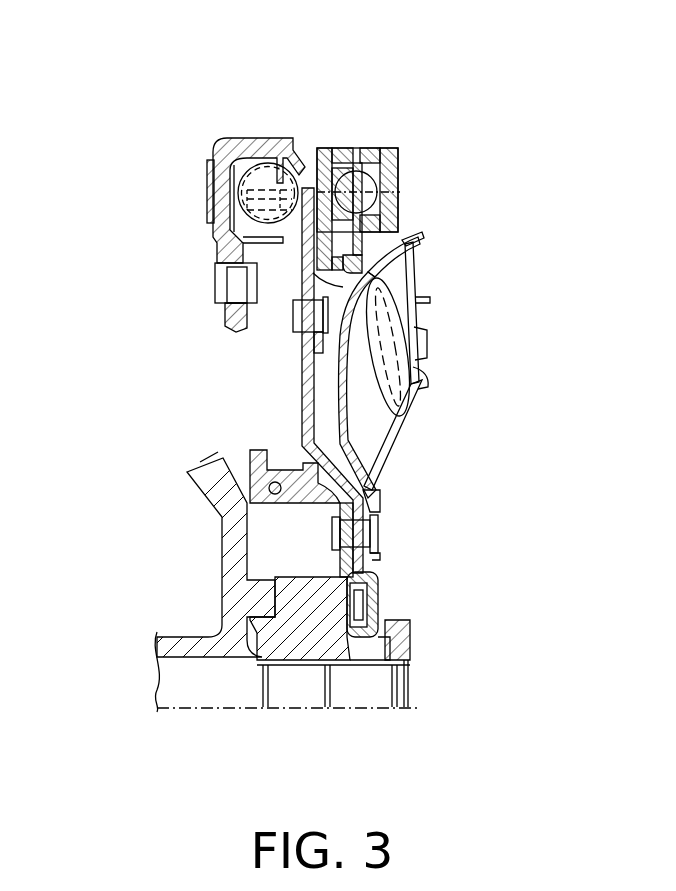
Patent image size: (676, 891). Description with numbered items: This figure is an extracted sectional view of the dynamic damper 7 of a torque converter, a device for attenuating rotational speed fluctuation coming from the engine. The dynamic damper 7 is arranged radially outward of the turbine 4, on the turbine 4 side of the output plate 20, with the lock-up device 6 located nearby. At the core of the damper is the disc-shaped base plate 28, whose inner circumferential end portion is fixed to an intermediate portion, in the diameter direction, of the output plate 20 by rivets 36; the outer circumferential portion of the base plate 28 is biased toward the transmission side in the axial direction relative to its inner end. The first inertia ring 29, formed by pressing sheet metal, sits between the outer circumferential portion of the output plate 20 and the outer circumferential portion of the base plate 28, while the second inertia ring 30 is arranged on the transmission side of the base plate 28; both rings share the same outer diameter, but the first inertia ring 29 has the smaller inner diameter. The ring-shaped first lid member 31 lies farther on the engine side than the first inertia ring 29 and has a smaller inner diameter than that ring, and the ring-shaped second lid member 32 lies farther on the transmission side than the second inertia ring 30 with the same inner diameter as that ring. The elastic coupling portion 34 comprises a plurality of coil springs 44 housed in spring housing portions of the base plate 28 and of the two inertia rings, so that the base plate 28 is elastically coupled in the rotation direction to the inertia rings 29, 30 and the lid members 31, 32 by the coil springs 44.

The turbine 4 is at (410, 423).
The lock-up device 6 is at (194, 240).
The dynamic damper 7 is at (420, 130).
The output plate 20 is at (307, 388).
The base plate 28 is at (378, 264).
The first inertia ring 29 is at (345, 148).
The second inertia ring 30 is at (381, 148).
The first lid member 31 is at (320, 147).
The second lid member 32 is at (398, 162).
The elastic coupling portion 34 is at (391, 148).
The rivets 36 is at (300, 320).
The coil springs 44 is at (378, 187).